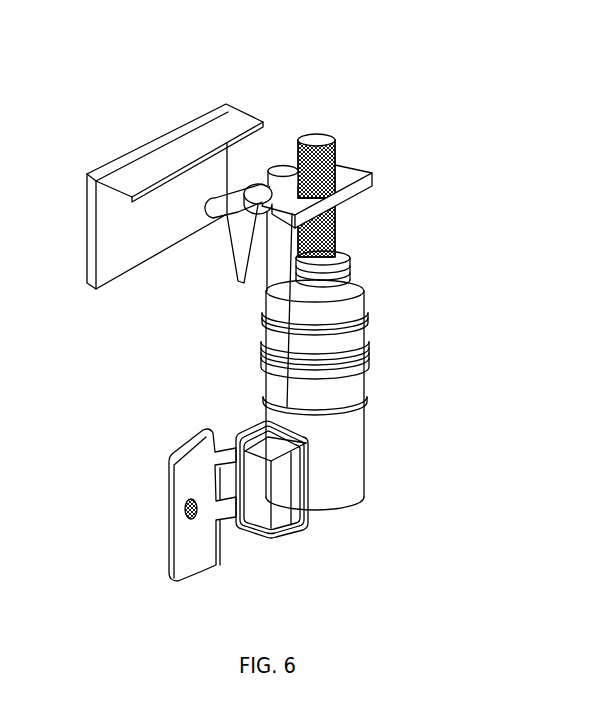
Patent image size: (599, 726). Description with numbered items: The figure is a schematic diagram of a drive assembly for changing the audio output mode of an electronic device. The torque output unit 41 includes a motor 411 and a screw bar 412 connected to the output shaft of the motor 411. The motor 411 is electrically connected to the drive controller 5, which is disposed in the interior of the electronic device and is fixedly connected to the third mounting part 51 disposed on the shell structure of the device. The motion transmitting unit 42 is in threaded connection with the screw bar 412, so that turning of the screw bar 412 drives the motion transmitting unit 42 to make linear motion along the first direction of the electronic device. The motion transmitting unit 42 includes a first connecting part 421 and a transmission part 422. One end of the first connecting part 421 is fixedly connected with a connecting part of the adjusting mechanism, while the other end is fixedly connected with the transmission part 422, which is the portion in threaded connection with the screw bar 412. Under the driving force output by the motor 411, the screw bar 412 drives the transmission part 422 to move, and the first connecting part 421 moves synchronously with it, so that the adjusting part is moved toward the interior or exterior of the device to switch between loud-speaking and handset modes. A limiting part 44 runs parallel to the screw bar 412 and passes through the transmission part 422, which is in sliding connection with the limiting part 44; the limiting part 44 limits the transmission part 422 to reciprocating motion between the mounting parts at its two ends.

The drive controller 5 is at (280, 522).
The third mounting part 51 is at (187, 571).
The torque output unit 41 is at (345, 322).
The motor 411 is at (365, 292).
The screw bar 412 is at (336, 217).
The motion transmitting unit 42 is at (175, 199).
The first connecting part 421 is at (236, 258).
The transmission part 422 is at (240, 283).
The limiting part 44 is at (274, 250).